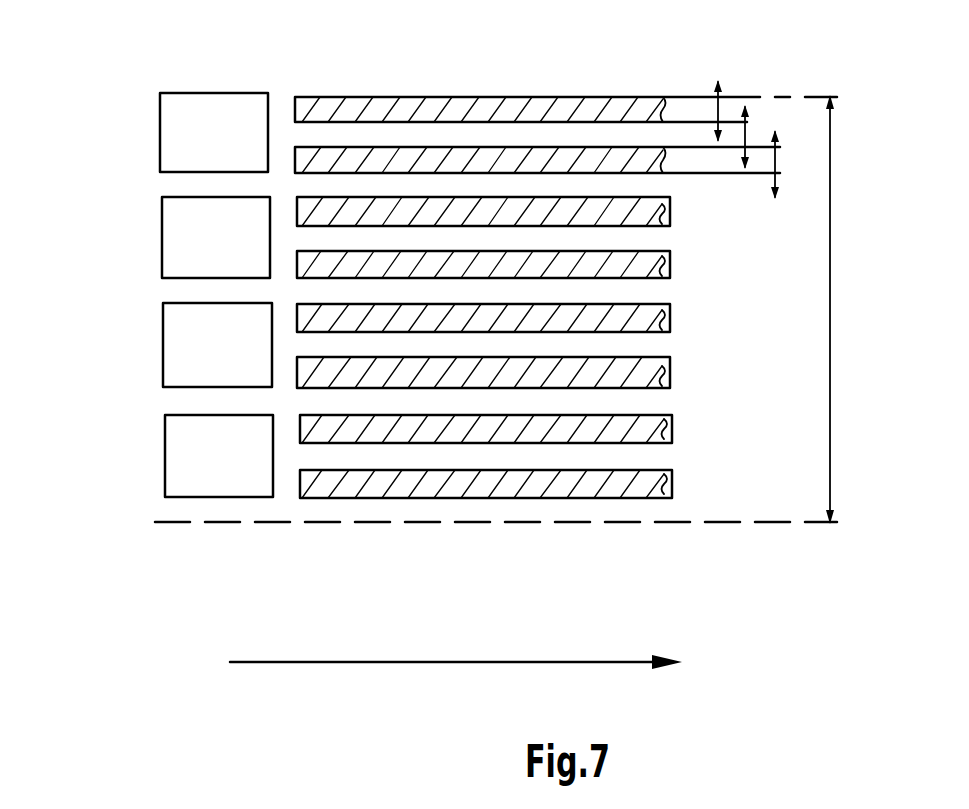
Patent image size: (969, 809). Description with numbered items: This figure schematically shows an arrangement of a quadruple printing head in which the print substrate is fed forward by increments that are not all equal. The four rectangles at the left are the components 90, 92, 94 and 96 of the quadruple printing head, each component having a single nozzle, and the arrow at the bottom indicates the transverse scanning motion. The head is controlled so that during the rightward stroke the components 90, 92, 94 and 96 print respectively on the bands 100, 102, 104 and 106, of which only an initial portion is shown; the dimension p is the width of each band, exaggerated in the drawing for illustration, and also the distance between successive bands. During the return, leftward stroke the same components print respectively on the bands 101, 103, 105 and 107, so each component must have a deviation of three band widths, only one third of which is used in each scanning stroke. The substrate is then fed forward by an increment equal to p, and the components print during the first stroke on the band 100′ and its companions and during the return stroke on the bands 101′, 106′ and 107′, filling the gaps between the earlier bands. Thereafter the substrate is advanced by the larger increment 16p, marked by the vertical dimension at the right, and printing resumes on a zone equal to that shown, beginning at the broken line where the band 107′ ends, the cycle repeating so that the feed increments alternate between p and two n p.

The printing head component 90 is at (175, 117).
The printing head component 92 is at (178, 210).
The printing head component 94 is at (178, 318).
The printing head component 96 is at (183, 433).
The band 100 is at (570, 110).
The band 100′ is at (633, 132).
The band 101 is at (405, 157).
The band 101′ is at (465, 190).
The band 102 is at (667, 214).
The band 103 is at (668, 268).
The band 104 is at (672, 312).
The band 105 is at (672, 370).
The band 106 is at (615, 432).
The band 106′ is at (523, 455).
The band 107 is at (645, 484).
The band 107′ is at (385, 505).
The band width p is at (722, 96).
The feed increment 16p is at (819, 309).